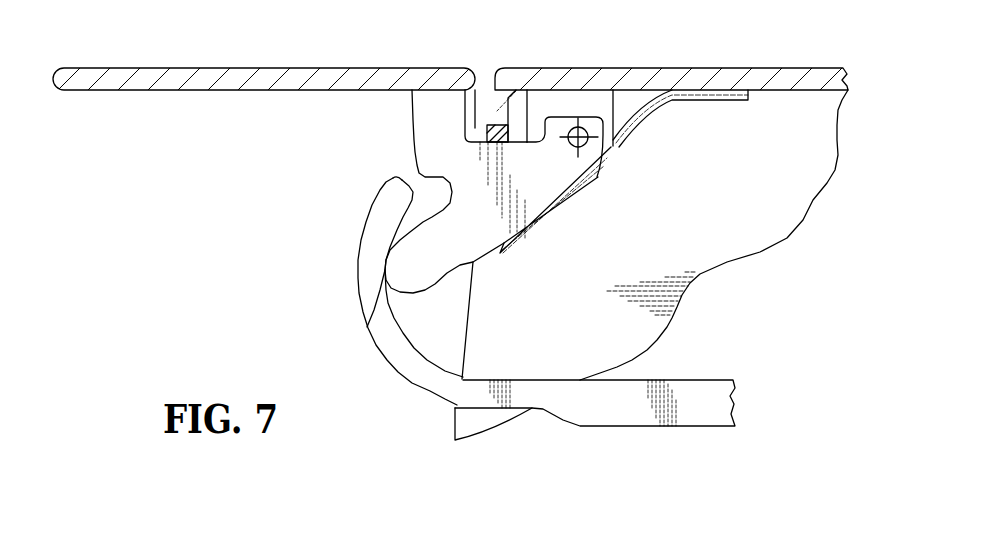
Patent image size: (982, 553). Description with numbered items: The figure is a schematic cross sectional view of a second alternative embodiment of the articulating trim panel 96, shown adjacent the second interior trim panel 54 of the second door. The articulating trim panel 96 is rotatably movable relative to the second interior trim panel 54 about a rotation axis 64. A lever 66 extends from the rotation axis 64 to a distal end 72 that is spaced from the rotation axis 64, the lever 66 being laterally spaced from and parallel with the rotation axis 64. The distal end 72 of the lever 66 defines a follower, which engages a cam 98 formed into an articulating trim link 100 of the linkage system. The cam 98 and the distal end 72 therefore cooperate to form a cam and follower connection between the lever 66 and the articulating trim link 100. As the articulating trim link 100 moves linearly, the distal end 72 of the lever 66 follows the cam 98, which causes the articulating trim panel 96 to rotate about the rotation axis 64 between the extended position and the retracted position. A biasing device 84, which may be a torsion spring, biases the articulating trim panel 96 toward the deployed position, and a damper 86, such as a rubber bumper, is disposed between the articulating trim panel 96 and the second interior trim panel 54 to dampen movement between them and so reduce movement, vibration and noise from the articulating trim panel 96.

The second interior trim panel 54 is at (717, 68).
The rotation axis 64 is at (582, 129).
The lever 66 is at (445, 285).
The distal end 72 is at (372, 333).
The biasing device 84 is at (643, 123).
The damper 86 is at (487, 133).
The articulating trim panel 96 is at (330, 68).
The cam 98 is at (368, 267).
The articulating trim link 100 is at (610, 415).